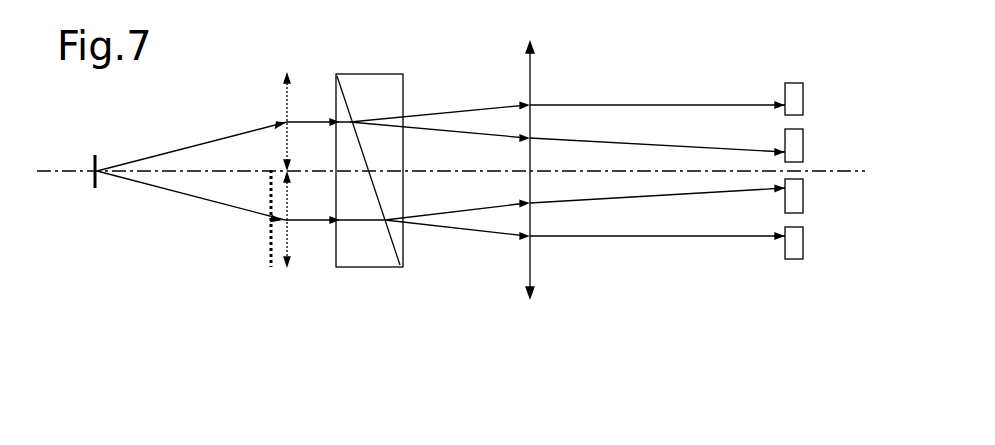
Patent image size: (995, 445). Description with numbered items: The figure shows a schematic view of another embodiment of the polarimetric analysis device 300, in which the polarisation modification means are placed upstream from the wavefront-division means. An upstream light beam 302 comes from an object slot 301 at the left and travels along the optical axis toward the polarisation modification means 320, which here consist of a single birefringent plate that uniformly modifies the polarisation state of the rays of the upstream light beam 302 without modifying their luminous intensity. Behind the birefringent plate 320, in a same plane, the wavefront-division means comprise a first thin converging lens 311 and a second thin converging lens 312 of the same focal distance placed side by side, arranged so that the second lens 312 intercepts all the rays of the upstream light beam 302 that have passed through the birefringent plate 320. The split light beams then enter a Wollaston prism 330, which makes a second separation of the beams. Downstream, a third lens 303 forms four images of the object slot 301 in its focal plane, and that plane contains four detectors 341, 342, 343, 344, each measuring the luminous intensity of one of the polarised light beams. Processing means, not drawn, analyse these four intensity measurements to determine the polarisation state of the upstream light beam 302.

The polarimetric analysis device 300 is at (451, 212).
The object slot 301 is at (96, 182).
The upstream light beam 302 is at (220, 187).
The third lens 303 is at (532, 270).
The first thin converging lens 311 is at (284, 78).
The second thin converging lens 312 is at (290, 242).
The polarisation modification means 320 is at (270, 254).
The Wollaston prism 330 is at (368, 74).
The detector 341 is at (803, 100).
The detector 342 is at (803, 147).
The detector 343 is at (803, 195).
The detector 344 is at (835, 255).